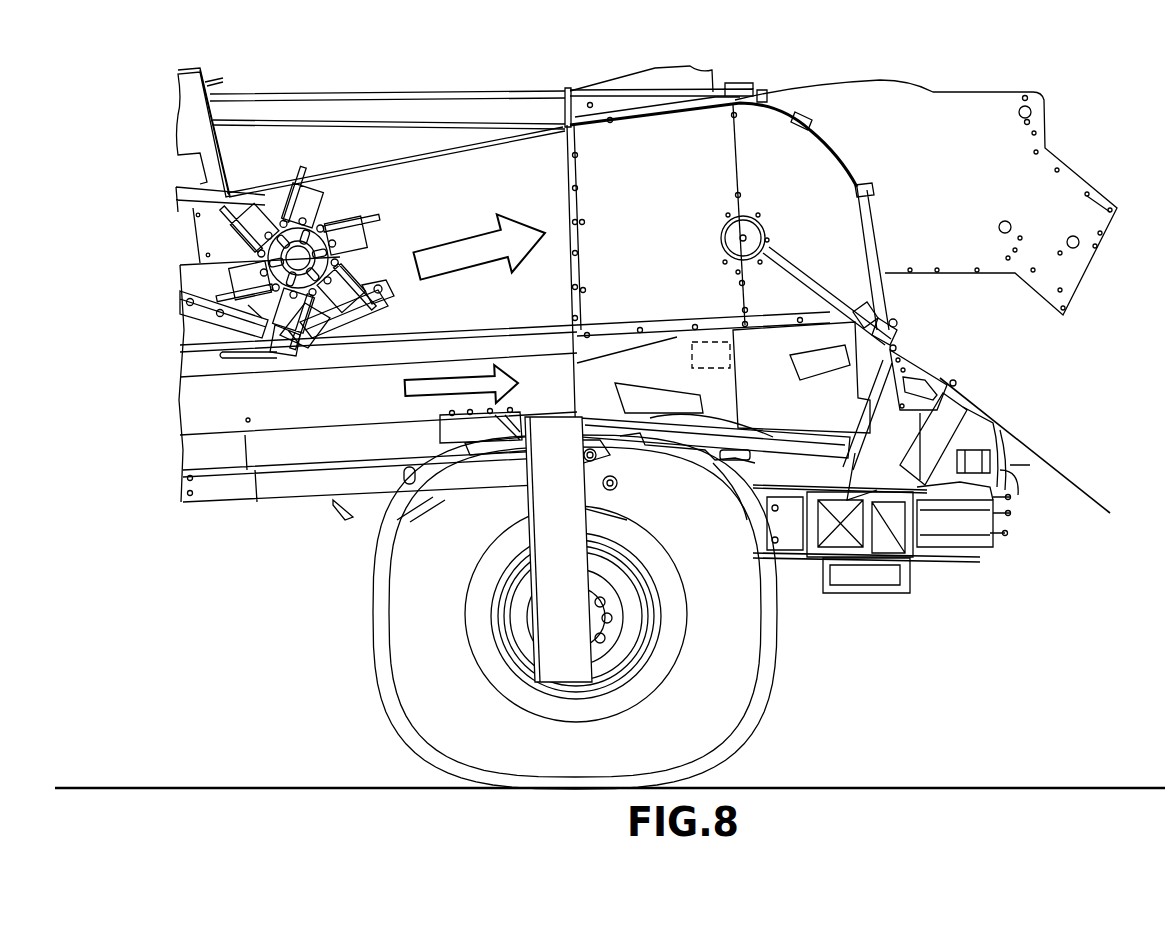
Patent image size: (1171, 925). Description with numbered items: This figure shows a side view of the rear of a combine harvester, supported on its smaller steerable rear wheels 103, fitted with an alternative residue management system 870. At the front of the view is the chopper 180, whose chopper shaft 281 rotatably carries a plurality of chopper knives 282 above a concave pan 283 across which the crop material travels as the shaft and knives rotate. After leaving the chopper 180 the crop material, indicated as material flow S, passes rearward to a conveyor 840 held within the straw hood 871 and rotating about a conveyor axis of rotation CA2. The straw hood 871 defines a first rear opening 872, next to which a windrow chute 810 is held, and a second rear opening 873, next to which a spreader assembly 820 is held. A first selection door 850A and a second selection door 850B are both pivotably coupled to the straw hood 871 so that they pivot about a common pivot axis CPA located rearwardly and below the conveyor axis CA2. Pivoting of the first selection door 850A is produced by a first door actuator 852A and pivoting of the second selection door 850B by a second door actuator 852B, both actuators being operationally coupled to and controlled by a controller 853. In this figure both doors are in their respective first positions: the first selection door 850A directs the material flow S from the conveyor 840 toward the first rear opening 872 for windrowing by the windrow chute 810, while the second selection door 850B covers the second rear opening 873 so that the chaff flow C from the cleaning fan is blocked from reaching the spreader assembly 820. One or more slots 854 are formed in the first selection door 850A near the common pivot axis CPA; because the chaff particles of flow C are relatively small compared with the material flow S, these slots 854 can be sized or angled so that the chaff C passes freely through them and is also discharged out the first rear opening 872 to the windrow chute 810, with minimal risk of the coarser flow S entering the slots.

The rear wheels 103 is at (707, 665).
The chopper 180 is at (285, 281).
The chopper shaft 281 is at (298, 252).
The chopper knives 282 is at (257, 218).
The concave pan 283 is at (323, 337).
The windrow chute 810 is at (897, 371).
The spreader assembly 820 is at (925, 588).
The conveyor 840 is at (738, 227).
The first selection door 850A is at (803, 290).
The second selection door 850B is at (845, 430).
The first door actuator 852A is at (868, 316).
The second door actuator 852B is at (950, 383).
The controller 853 is at (707, 340).
The slots 854 is at (873, 325).
The residue management system 870 is at (845, 138).
The straw hood 871 is at (773, 120).
The first rear opening 872 is at (888, 332).
The second rear opening 873 is at (855, 453).
The conveyor axis of rotation CA2 is at (743, 238).
The common pivot axis CPA is at (892, 348).
The material flow from the conveyor S is at (480, 232).
The material flow from the cleaning fan C is at (455, 362).